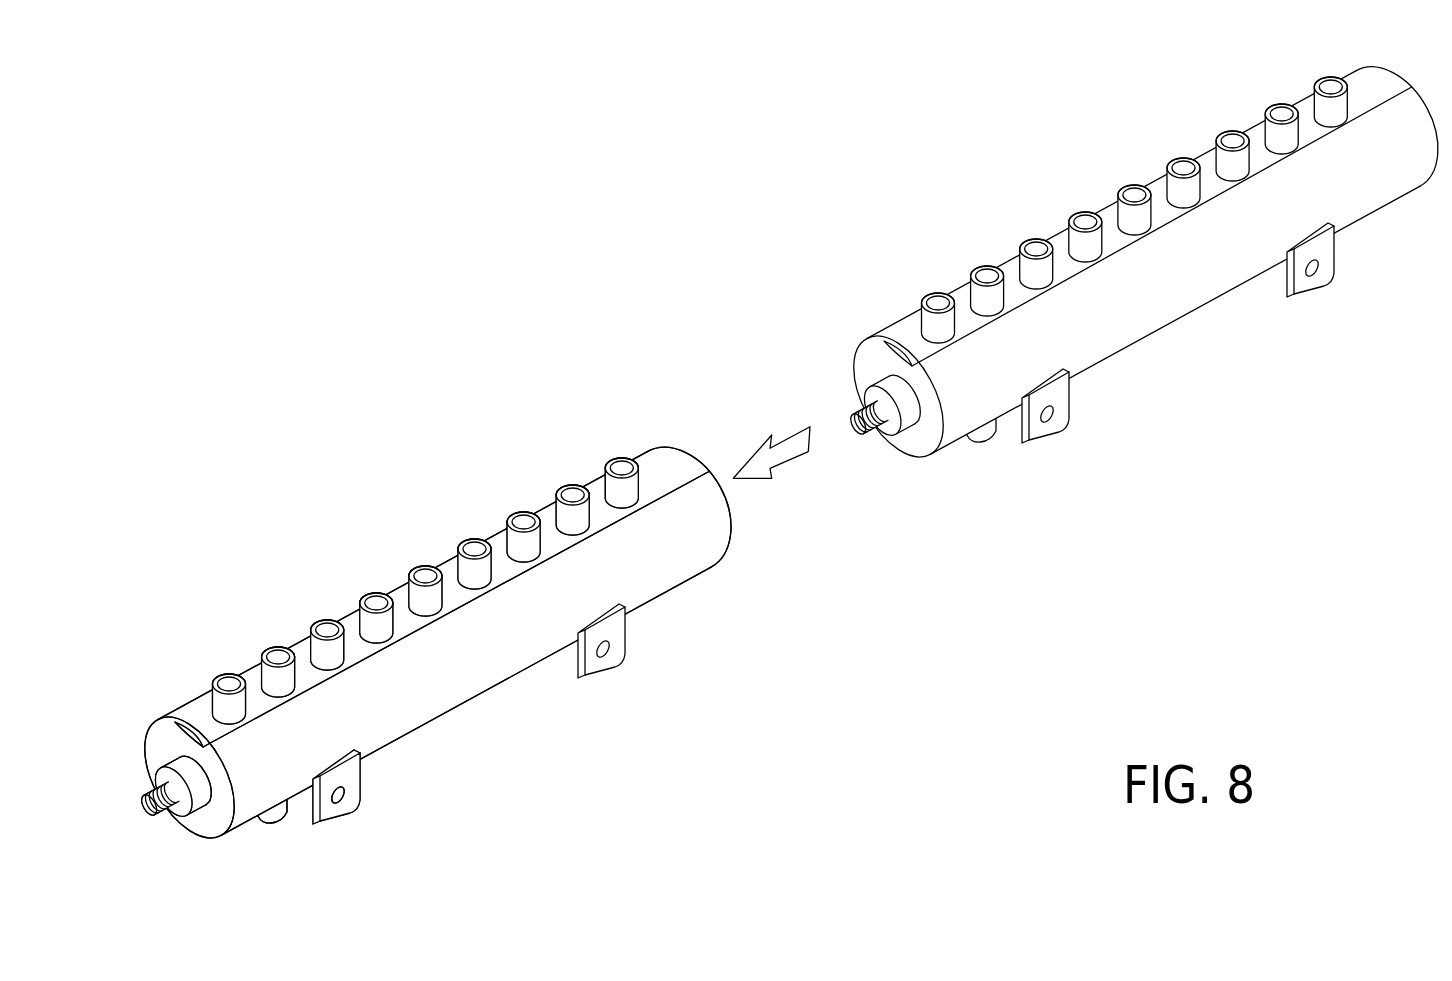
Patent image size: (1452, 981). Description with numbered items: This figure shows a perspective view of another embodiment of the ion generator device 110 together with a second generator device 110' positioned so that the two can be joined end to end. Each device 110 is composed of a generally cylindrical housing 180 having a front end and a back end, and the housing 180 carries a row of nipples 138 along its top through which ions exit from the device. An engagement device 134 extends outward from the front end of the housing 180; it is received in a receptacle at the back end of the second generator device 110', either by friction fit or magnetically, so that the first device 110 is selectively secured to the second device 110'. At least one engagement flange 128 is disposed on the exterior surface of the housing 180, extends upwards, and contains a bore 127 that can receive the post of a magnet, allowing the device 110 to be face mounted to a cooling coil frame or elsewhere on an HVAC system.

The device 110 is at (428, 625).
The second generator device 110' is at (1136, 252).
The nipples 138 is at (649, 458).
The housing 180 is at (675, 555).
The engagement device 134 is at (160, 808).
The engagement flange 128 is at (328, 813).
The bore 127 is at (347, 810).